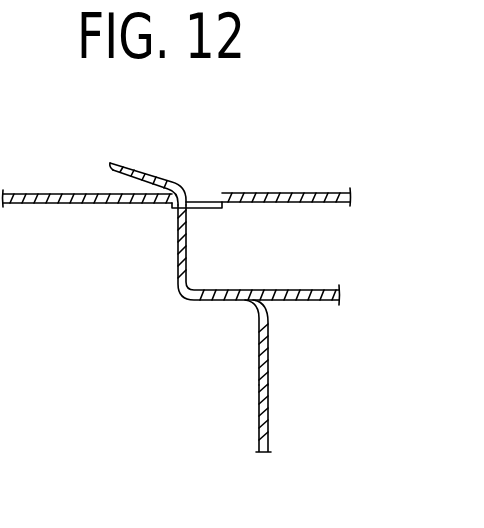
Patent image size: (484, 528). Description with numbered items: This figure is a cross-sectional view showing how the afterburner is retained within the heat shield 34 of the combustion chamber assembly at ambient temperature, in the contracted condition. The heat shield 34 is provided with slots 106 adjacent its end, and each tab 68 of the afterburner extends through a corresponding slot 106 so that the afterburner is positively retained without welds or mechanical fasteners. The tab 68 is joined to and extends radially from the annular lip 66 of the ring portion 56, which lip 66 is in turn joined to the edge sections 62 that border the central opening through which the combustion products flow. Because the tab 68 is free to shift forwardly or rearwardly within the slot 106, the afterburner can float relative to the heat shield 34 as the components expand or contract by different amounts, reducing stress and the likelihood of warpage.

The heat shield 34 is at (58, 194).
The tabs 68 is at (137, 166).
The slots 106 is at (210, 202).
The annular lip 66 is at (212, 303).
The edge sections 62 is at (270, 355).
The ring portion 56 is at (260, 395).